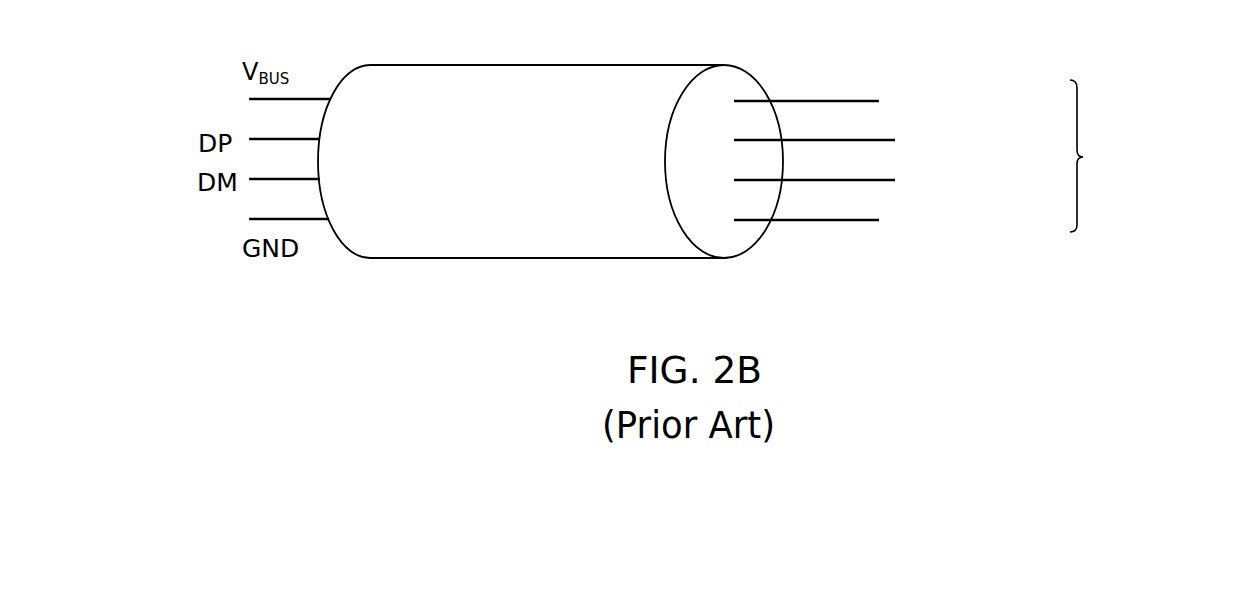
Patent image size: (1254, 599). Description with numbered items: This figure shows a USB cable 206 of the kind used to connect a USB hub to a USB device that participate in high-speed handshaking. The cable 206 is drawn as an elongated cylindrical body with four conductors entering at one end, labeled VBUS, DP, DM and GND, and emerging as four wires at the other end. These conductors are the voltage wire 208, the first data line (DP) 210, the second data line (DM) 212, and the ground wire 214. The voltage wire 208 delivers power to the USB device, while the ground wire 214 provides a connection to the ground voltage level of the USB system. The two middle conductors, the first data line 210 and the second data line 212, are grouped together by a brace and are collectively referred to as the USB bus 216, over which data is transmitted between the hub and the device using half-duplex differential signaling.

The USB cable 206 is at (538, 65).
The voltage wire 208 is at (811, 101).
The first data line (DP) 210 is at (895, 140).
The second data line (DM) 212 is at (895, 180).
The ground wire 214 is at (818, 220).
The USB bus 216 is at (1080, 177).